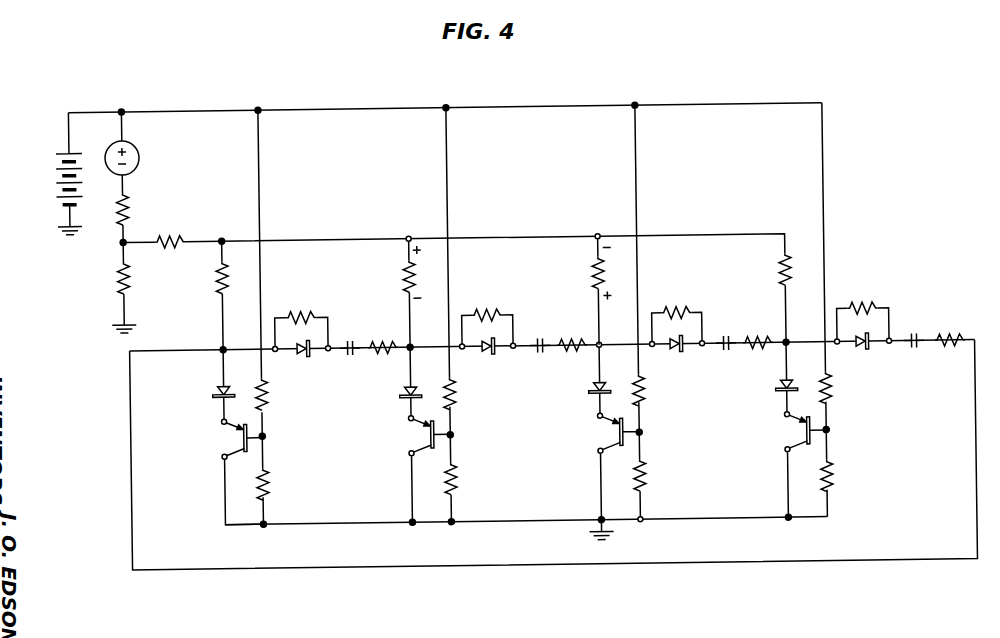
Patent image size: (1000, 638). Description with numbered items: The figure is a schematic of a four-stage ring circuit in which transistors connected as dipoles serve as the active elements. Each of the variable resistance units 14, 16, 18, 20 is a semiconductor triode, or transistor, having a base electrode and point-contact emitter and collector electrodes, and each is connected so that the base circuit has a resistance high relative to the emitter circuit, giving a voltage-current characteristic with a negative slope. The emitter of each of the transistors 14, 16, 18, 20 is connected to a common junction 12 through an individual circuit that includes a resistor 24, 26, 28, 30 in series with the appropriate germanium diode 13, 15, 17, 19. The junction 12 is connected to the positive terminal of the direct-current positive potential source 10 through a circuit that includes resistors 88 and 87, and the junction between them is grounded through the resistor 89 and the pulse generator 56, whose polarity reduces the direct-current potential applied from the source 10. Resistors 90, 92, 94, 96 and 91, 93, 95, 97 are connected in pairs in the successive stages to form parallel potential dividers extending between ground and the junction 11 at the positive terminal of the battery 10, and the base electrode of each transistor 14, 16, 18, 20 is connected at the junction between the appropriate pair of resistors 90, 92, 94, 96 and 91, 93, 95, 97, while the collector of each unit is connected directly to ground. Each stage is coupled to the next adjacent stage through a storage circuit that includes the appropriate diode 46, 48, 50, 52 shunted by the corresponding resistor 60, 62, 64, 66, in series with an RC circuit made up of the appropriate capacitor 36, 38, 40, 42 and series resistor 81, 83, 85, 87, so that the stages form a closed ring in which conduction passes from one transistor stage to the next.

The direct-current positive potential source 10 is at (64, 174).
The junction at positive terminal of battery 11 is at (262, 106).
The common junction 12 is at (225, 235).
The diode 13 is at (215, 385).
The variable resistance unit 14 is at (240, 432).
The diode 15 is at (406, 389).
The variable resistance unit 16 is at (430, 434).
The diode 17 is at (593, 389).
The variable resistance unit 18 is at (616, 434).
The diode 19 is at (784, 381).
The variable resistance unit 20 is at (802, 430).
The resistor 24 is at (218, 276).
The resistor 26 is at (406, 275).
The resistor 28 is at (594, 277).
The resistor 30 is at (781, 277).
The capacitor 36 is at (350, 358).
The capacitor 38 is at (539, 358).
The capacitor 40 is at (725, 356).
The capacitor 42 is at (914, 351).
The diode 46 is at (302, 357).
The diode 48 is at (483, 357).
The diode 50 is at (673, 355).
The diode 52 is at (860, 351).
The pulse generator 56 is at (140, 147).
The resistor 60 is at (305, 308).
The resistor 62 is at (490, 312).
The resistor 64 is at (677, 312).
The resistor 66 is at (866, 308).
The series resistor 81 is at (384, 341).
The series resistor 83 is at (573, 343).
The series resistor 85 is at (764, 344).
The series resistor 87 is at (951, 343).
The resistor 88 is at (172, 230).
The resistor 89 is at (119, 275).
The resistor 90 is at (130, 204).
The resistor 91 is at (270, 469).
The resistor 92 is at (458, 392).
The resistor 93 is at (458, 479).
The resistor 94 is at (648, 390).
The resistor 95 is at (648, 468).
The resistor 96 is at (832, 389).
The resistor 97 is at (835, 461).